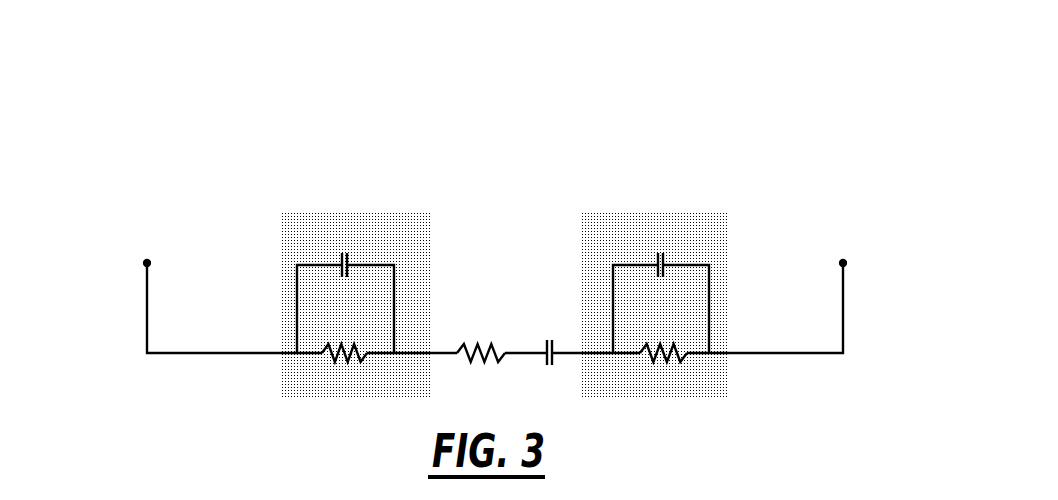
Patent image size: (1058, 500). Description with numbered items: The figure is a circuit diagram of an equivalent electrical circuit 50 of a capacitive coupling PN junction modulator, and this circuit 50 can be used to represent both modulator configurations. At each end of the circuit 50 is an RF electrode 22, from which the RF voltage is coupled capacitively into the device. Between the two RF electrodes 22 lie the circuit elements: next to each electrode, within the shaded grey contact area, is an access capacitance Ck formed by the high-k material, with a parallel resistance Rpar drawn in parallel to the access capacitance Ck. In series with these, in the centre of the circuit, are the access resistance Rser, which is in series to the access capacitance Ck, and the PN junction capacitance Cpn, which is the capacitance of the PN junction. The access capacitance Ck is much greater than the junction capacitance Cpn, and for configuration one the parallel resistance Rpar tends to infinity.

The electrical circuit 50 is at (522, 75).
The RF electrode 22 is at (152, 195).
The access capacitance Ck is at (501, 251).
The parallel resistance Rpar is at (504, 337).
The access resistance Rser is at (481, 336).
The PN junction capacitance Cpn is at (544, 337).